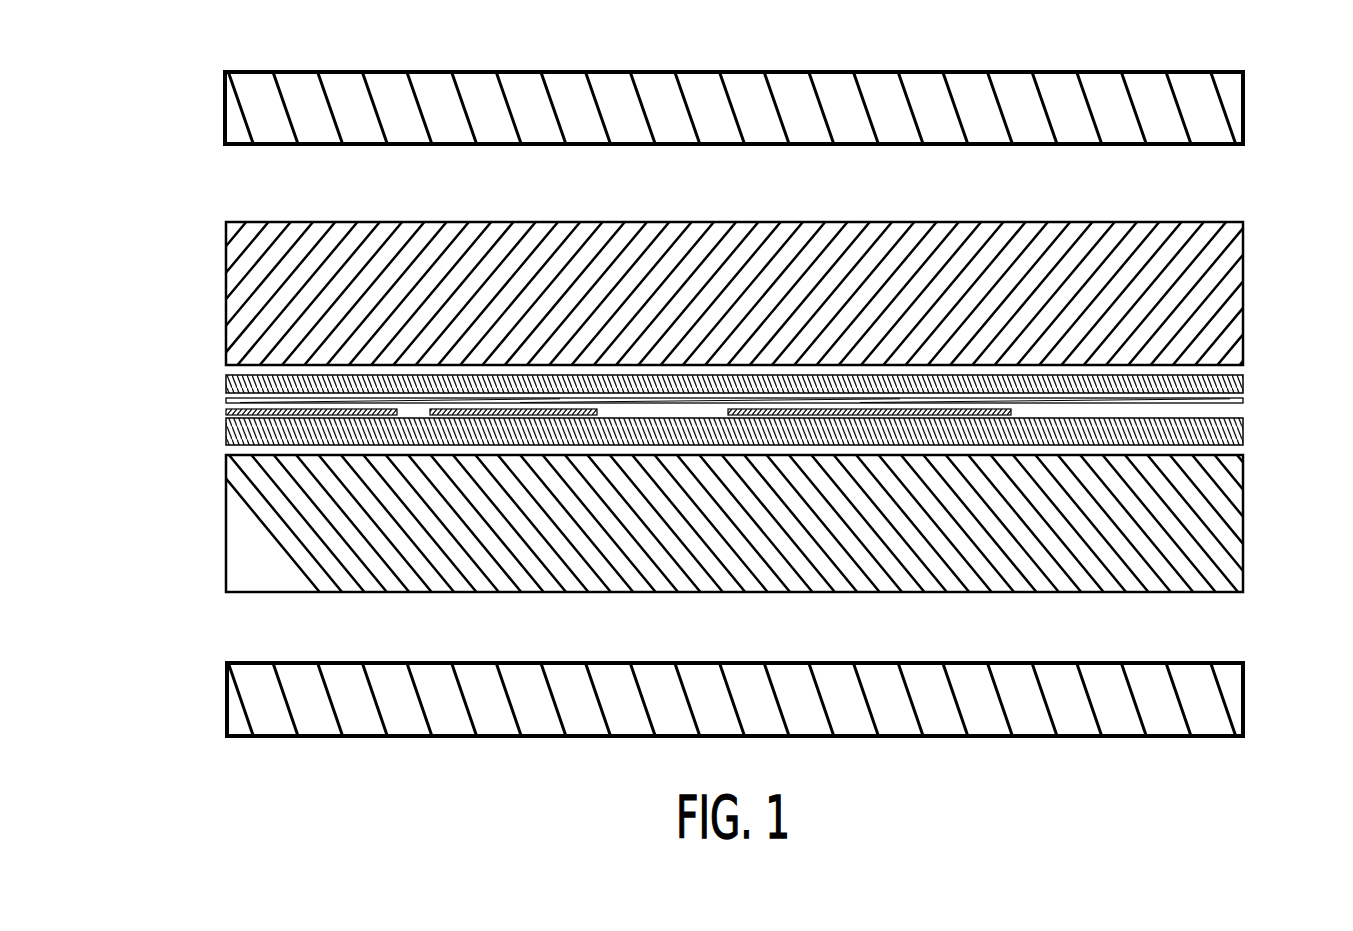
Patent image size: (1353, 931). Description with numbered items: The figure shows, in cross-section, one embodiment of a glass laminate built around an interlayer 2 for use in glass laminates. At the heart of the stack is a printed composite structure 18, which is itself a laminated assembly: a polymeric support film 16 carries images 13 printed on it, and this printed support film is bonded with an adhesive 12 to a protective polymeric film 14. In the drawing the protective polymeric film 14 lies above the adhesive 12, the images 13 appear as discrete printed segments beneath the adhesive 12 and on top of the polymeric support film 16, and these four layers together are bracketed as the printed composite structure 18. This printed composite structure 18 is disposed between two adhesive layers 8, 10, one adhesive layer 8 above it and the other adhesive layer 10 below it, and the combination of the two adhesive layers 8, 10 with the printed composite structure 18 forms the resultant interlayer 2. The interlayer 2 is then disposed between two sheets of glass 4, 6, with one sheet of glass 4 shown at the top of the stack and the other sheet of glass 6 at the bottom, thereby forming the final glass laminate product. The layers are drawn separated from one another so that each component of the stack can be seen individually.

The interlayer 2 is at (156, 188).
The sheet of glass 4 is at (1243, 123).
The sheet of glass 6 is at (1243, 700).
The adhesive layer 8 is at (1243, 297).
The adhesive layer 10 is at (1243, 522).
The adhesive 12 is at (1243, 403).
The images 13 is at (1011, 410).
The protective polymeric film 14 is at (1243, 392).
The polymeric support film 16 is at (1243, 430).
The printed composite structure 18 is at (219, 369).